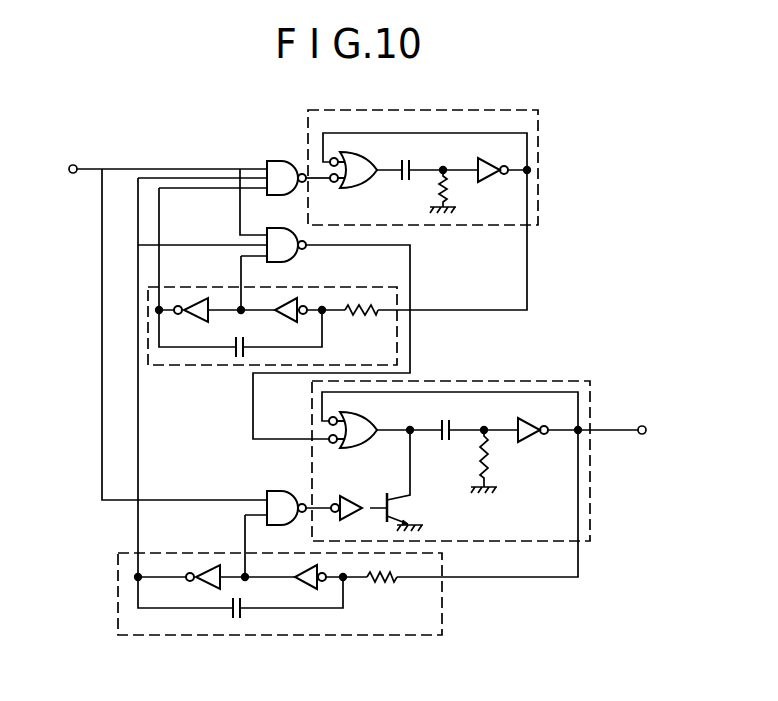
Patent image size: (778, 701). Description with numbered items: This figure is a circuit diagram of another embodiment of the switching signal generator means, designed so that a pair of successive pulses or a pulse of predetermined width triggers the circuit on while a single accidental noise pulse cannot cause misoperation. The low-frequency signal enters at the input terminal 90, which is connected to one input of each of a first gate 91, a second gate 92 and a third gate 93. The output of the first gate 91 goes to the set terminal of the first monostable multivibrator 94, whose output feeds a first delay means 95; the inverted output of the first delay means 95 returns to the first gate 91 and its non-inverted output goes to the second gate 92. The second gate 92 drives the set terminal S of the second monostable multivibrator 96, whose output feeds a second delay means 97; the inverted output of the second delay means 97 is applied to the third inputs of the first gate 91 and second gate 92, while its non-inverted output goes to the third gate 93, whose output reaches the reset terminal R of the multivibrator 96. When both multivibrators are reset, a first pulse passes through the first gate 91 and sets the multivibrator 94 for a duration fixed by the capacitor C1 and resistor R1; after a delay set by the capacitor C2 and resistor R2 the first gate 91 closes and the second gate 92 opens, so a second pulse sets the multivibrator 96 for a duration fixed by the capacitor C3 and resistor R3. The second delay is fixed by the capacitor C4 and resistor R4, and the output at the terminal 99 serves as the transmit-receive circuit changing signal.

The input terminal 90 is at (73, 164).
The first gate 91 is at (268, 163).
The second gate 92 is at (290, 262).
The third gate 93 is at (276, 491).
The first monostable multivibrator 94 is at (455, 167).
The first delay means 95 is at (278, 305).
The second monostable multivibrator 96 is at (457, 430).
The second delay means 97 is at (308, 607).
The output terminal 99 is at (646, 428).
The capacitor C1 is at (420, 146).
The resistor R1 is at (440, 192).
The capacitor C2 is at (244, 335).
The resistor R2 is at (362, 315).
The capacitor C3 is at (449, 413).
The resistor R3 is at (490, 462).
The capacitor C4 is at (240, 620).
The resistor R4 is at (381, 582).